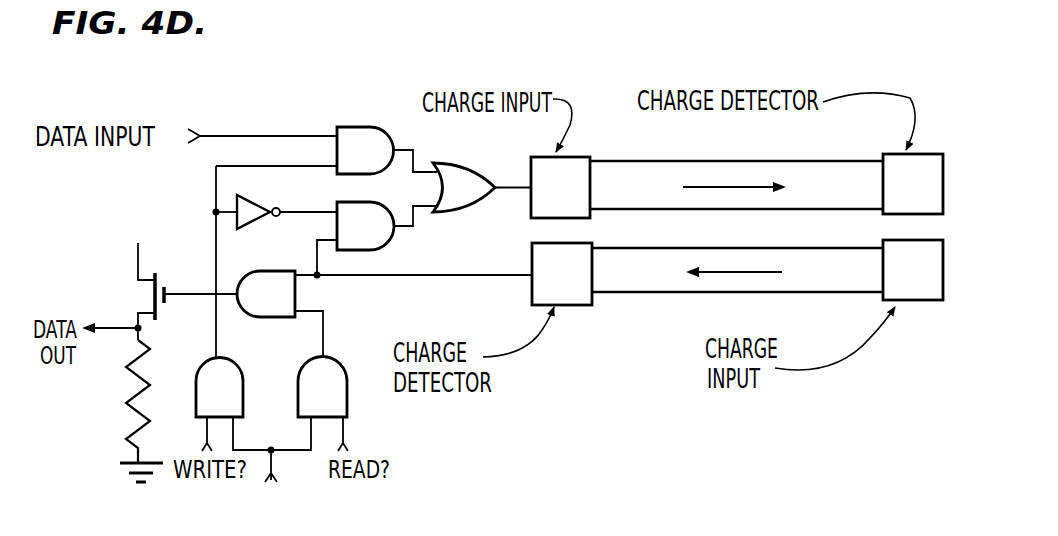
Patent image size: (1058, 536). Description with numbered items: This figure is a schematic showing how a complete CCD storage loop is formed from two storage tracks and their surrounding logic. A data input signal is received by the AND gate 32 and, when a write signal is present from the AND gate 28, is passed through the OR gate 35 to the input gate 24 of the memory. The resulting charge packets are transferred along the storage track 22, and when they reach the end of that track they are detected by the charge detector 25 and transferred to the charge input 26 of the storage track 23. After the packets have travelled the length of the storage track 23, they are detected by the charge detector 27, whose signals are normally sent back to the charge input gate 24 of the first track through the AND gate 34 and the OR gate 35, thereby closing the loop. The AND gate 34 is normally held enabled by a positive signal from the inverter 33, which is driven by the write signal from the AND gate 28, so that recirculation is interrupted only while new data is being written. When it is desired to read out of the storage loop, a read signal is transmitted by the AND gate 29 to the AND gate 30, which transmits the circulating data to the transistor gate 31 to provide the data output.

The storage track 22 is at (611, 199).
The storage track 23 is at (606, 284).
The input gate 24 is at (548, 199).
The charge detector 25 is at (901, 196).
The charge input 26 is at (901, 282).
The charge detector 27 is at (550, 285).
The AND gate 28 is at (208, 412).
The AND gate 29 is at (310, 412).
The AND gate 30 is at (256, 306).
The transistor gate 31 is at (150, 300).
The AND gate 32 is at (346, 162).
The inverter 33 is at (245, 226).
The AND gate 34 is at (346, 238).
The OR gate 35 is at (448, 199).